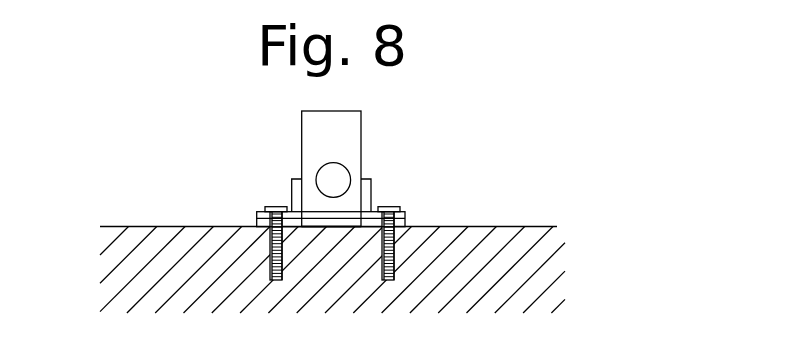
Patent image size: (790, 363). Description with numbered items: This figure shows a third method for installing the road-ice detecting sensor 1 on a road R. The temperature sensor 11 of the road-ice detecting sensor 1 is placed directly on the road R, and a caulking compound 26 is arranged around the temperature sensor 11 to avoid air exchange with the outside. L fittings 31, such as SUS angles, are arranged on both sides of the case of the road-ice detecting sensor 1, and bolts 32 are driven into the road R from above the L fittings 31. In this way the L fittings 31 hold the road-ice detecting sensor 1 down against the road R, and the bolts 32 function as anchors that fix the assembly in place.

The road-ice detecting sensor 1 is at (363, 132).
The temperature sensor 11 is at (327, 227).
The caulking compound 26 is at (255, 215).
The L fittings 31 is at (293, 185).
The bolts 32 is at (277, 207).
The road R is at (146, 226).